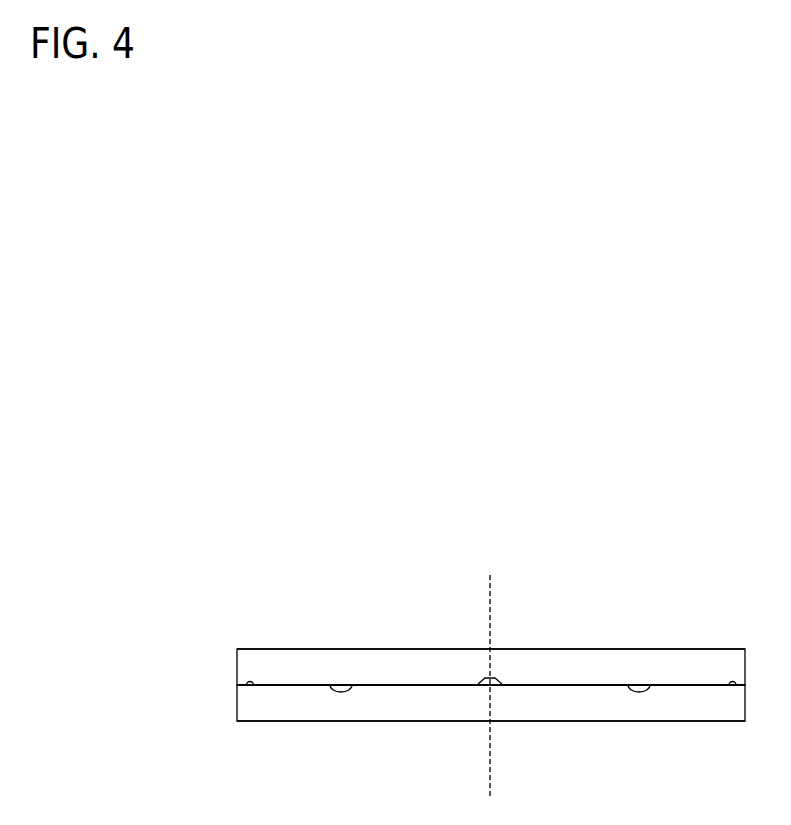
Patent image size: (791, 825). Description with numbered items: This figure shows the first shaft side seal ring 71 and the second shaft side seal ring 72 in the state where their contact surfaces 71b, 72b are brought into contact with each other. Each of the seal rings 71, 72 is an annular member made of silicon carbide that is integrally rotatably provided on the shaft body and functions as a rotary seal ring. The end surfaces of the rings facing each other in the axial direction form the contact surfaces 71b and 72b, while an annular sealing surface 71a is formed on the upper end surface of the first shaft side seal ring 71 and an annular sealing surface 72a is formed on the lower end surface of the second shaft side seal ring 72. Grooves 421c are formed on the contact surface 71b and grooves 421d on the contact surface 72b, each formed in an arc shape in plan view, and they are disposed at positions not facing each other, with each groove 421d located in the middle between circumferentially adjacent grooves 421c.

The first shaft side seal ring 71 is at (333, 647).
The annular sealing surface 71a is at (405, 648).
The contact surface 71b is at (428, 686).
The second shaft side seal ring 72 is at (270, 722).
The annular sealing surface 72a is at (558, 722).
The contact surface 72b is at (587, 683).
The groove 421c is at (249, 682).
The groove 421d is at (341, 692).